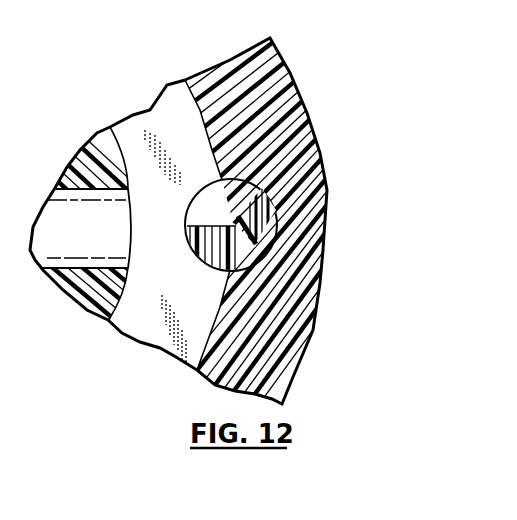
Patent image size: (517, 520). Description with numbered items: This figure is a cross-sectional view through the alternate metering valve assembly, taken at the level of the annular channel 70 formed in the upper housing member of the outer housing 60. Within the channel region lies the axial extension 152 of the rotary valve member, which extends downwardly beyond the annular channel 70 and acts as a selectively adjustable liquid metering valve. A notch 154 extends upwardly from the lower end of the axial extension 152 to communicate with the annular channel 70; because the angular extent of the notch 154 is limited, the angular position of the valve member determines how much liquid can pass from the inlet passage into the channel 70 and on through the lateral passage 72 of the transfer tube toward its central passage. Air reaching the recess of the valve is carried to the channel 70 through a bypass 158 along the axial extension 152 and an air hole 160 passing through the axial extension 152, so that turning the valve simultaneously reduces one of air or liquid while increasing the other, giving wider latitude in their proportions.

The outer housing 60 is at (312, 332).
The annular channel 70 is at (140, 333).
The lateral passage 72 is at (80, 268).
The axial extension 152 is at (191, 261).
The notch 154 is at (190, 208).
The bypass 158 is at (258, 250).
The air hole 160 is at (240, 214).